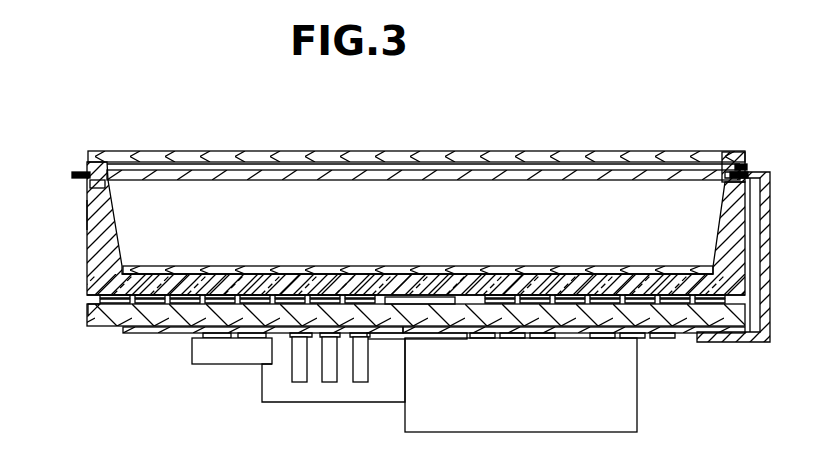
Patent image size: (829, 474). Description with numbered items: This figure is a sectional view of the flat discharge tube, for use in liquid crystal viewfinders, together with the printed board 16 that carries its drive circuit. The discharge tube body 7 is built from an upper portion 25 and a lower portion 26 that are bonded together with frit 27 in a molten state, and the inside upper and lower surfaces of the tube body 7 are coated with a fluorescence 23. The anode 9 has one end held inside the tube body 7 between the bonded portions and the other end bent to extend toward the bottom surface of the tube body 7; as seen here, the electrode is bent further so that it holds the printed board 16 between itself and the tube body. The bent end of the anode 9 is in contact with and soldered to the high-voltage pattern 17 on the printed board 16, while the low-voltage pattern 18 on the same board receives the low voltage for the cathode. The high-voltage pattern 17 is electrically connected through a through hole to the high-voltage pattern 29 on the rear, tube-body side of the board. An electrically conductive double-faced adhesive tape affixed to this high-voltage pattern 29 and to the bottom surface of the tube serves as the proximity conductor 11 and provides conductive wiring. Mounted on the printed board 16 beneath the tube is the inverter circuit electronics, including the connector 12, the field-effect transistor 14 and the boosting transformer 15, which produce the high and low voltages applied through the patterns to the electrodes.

The discharge tube body 7 is at (88, 217).
The anode 9 is at (770, 188).
The proximity conductor 11 is at (117, 296).
The connector 12 is at (323, 403).
The field-effect transistor 14 is at (212, 364).
The boosting transformer 15 is at (417, 432).
The printed board 16 is at (96, 327).
The high-voltage pattern 17 is at (665, 333).
The low-voltage pattern 18 is at (150, 333).
The fluorescence 23 is at (472, 160).
The upper portion 25 is at (95, 150).
The lower portion 26 is at (66, 148).
The frit 27 is at (88, 160).
The high-voltage pattern 29 is at (88, 310).